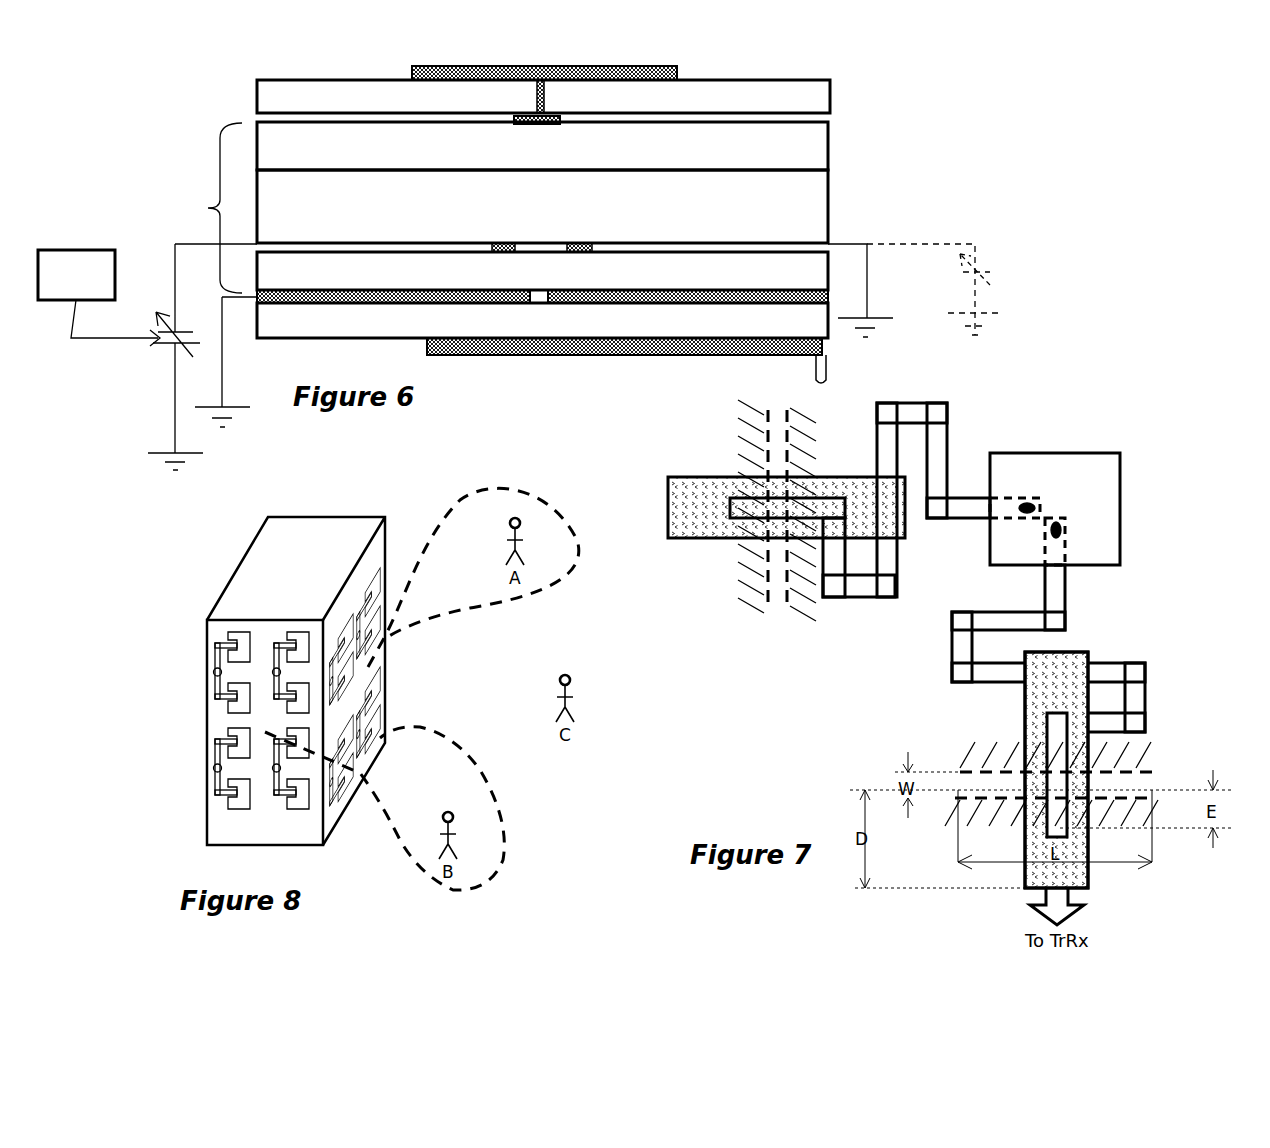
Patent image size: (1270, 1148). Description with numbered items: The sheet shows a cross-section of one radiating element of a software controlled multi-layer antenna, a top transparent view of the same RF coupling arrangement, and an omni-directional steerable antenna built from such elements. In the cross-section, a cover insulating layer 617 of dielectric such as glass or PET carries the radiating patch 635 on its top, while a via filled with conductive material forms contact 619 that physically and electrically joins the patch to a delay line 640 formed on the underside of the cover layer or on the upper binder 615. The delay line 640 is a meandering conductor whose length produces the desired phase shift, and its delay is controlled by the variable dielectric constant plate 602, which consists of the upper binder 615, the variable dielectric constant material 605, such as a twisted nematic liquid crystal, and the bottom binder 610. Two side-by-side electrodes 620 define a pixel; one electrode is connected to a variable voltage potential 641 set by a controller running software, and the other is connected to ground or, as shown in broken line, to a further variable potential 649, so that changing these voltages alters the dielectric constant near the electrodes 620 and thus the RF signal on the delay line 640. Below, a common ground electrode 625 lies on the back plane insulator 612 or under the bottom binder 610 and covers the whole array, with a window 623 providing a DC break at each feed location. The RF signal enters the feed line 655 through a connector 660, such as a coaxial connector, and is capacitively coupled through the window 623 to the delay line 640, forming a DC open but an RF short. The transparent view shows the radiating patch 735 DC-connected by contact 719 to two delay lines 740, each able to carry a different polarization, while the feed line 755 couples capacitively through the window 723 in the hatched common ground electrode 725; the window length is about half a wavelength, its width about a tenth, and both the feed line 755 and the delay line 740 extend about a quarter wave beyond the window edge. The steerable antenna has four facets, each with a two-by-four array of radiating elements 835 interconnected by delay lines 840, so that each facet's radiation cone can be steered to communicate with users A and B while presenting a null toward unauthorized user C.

In FIG. 6, the variable dielectric constant plate 602 is at (197, 208).
In FIG. 6, the variable dielectric constant material 605 is at (542, 206).
In FIG. 6, the bottom binder 610 is at (542, 271).
In FIG. 6, the back plane insulator 612 is at (542, 320).
In FIG. 6, the upper binder 615 is at (542, 146).
In FIG. 6, the cover insulating layer 617 is at (543, 96).
In FIG. 6, the contact 619 is at (545, 88).
In FIG. 6, the electrodes 620 is at (500, 252).
In FIG. 6, the window 623 is at (542, 303).
In FIG. 6, the common ground electrode 625 is at (658, 303).
In FIG. 6, the radiating patch 635 is at (412, 70).
In FIG. 6, the delay line 640 is at (545, 124).
In FIG. 6, the variable voltage potential 641 is at (165, 350).
In FIG. 6, the variable potential 649 is at (985, 285).
In FIG. 6, the feed line 655 is at (630, 364).
In FIG. 6, the connector 660 is at (815, 372).
In FIG. 7, the contact 719 is at (1065, 525).
In FIG. 7, the window 723 is at (1130, 778).
In FIG. 7, the common ground electrode 725 is at (742, 455).
In FIG. 7, the radiating patch 735 is at (894, 509).
In FIG. 7, the delay lines 740 is at (945, 430).
In FIG. 7, the feed line 755 is at (1080, 888).
In FIG. 8, the radiating elements 835 is at (240, 632).
In FIG. 8, the delay lines 840 is at (218, 738).